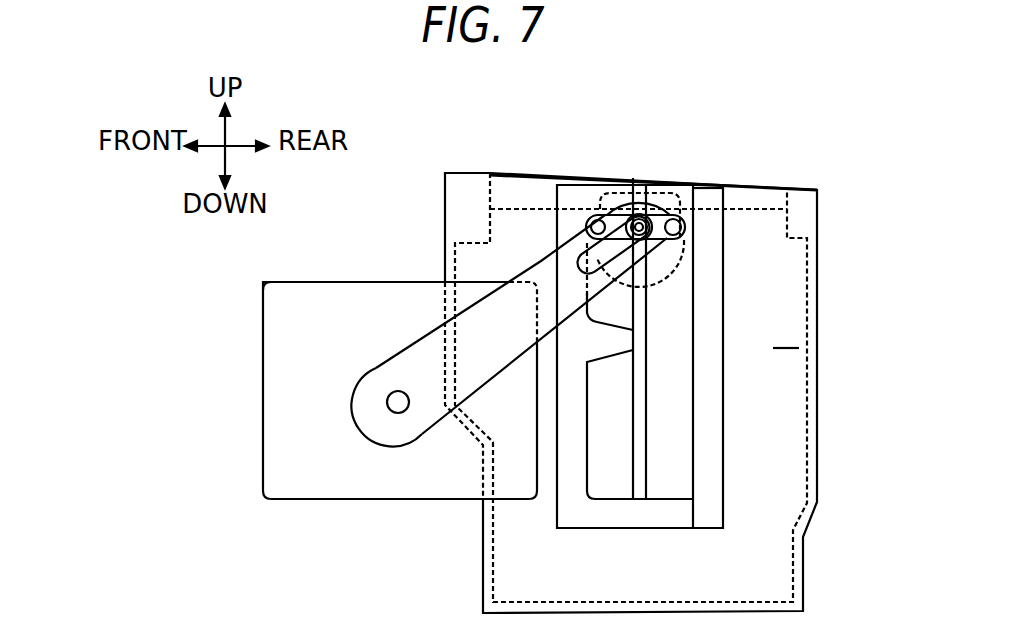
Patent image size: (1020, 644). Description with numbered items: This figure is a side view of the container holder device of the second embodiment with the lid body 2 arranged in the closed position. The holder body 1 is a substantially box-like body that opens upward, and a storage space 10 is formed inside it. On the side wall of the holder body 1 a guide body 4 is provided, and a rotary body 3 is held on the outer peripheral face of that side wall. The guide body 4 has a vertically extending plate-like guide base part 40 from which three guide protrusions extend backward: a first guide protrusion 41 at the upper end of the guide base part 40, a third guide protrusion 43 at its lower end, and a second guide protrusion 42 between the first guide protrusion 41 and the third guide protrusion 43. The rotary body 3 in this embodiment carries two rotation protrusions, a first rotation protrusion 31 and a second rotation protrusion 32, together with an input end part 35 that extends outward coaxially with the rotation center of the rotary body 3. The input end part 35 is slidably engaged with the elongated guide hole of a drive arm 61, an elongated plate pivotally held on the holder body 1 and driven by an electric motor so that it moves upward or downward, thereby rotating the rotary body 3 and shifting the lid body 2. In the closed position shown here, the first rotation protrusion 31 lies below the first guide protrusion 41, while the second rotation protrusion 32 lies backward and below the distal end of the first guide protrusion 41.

The holder body 1 is at (818, 322).
The lid body 2 is at (668, 183).
The rotary body 3 is at (672, 242).
The guide body 4 is at (557, 512).
The storage space 10 is at (785, 335).
The first rotation protrusion 31 is at (586, 219).
The second rotation protrusion 32 is at (687, 226).
The input end part 35 is at (623, 281).
The guide base part 40 is at (588, 442).
The first guide protrusion 41 is at (597, 188).
The second guide protrusion 42 is at (613, 360).
The third guide protrusion 43 is at (632, 528).
The drive arm 61 is at (501, 371).